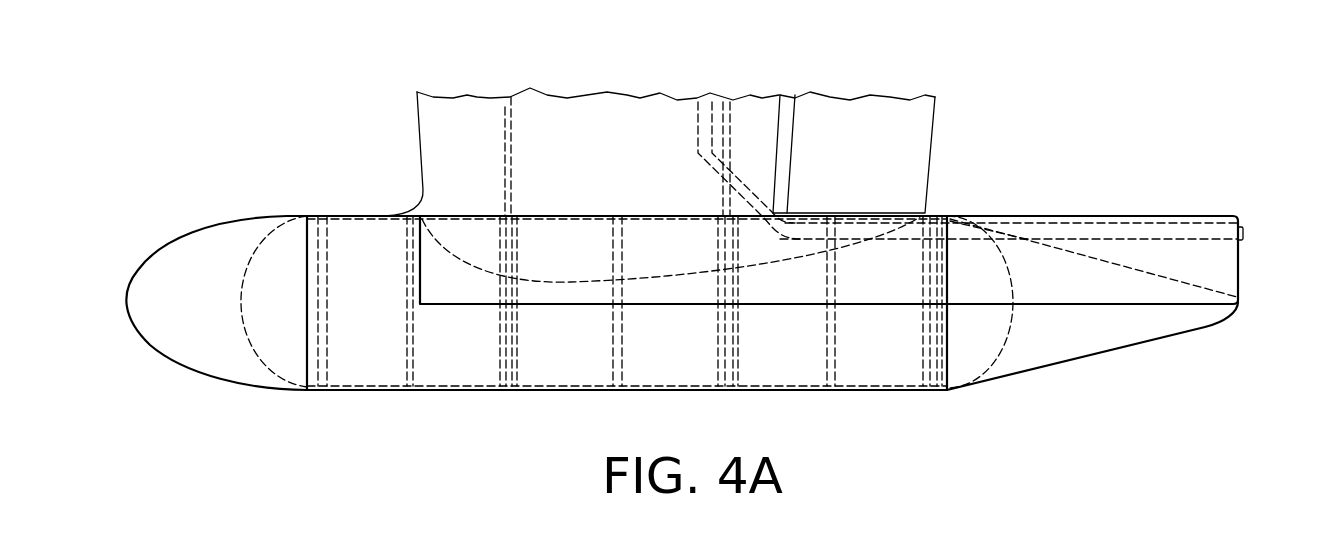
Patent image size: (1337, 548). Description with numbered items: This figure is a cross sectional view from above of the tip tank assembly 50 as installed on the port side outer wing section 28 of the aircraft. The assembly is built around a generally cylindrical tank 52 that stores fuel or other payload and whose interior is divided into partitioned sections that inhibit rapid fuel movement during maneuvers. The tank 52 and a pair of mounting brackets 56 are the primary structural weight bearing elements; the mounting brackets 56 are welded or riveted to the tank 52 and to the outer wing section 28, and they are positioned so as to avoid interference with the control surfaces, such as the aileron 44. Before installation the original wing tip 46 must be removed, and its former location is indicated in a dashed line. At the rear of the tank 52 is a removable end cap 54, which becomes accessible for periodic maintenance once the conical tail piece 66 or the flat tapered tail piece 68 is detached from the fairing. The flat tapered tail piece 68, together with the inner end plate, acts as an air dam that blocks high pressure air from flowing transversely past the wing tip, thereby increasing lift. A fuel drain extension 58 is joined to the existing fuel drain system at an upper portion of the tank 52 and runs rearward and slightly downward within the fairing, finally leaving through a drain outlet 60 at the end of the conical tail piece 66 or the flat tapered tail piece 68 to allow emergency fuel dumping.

The tip tank assembly 50 is at (161, 209).
The tank 52 is at (353, 238).
The port side outer wing section 28 is at (602, 130).
The mounting brackets 56 is at (507, 147).
The aileron control surface 44 is at (912, 139).
The wing tip 46 is at (567, 280).
The removable end cap 54 is at (976, 352).
The fuel drain extension 58 is at (1120, 223).
The drain outlet 60 is at (1247, 230).
The flat tapered tail piece 68 is at (1220, 258).
The conical tail piece 66 is at (1068, 340).